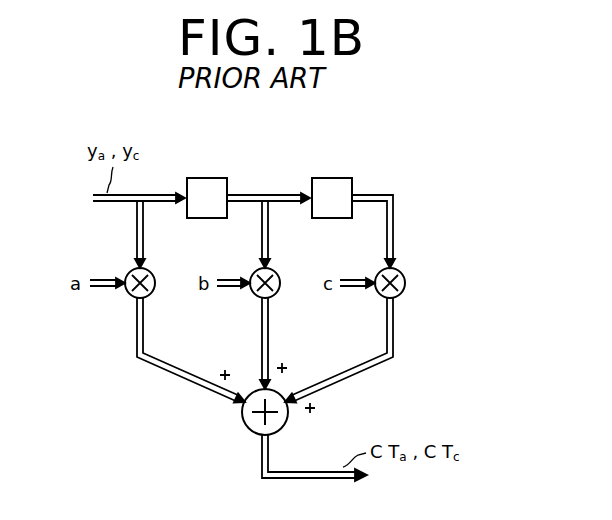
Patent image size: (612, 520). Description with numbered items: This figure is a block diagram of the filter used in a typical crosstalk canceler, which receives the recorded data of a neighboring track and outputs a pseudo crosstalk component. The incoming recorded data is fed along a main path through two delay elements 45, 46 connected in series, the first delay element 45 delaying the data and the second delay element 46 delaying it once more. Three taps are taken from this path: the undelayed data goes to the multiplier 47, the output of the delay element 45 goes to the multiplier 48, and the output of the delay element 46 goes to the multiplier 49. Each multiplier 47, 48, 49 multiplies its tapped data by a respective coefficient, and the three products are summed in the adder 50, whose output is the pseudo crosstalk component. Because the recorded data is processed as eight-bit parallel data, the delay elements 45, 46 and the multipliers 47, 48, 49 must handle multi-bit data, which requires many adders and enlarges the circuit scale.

The delay element 45 is at (217, 178).
The delay element 46 is at (345, 178).
The multiplier 47 is at (151, 294).
The multiplier 48 is at (276, 294).
The multiplier 49 is at (401, 294).
The adder 50 is at (250, 428).